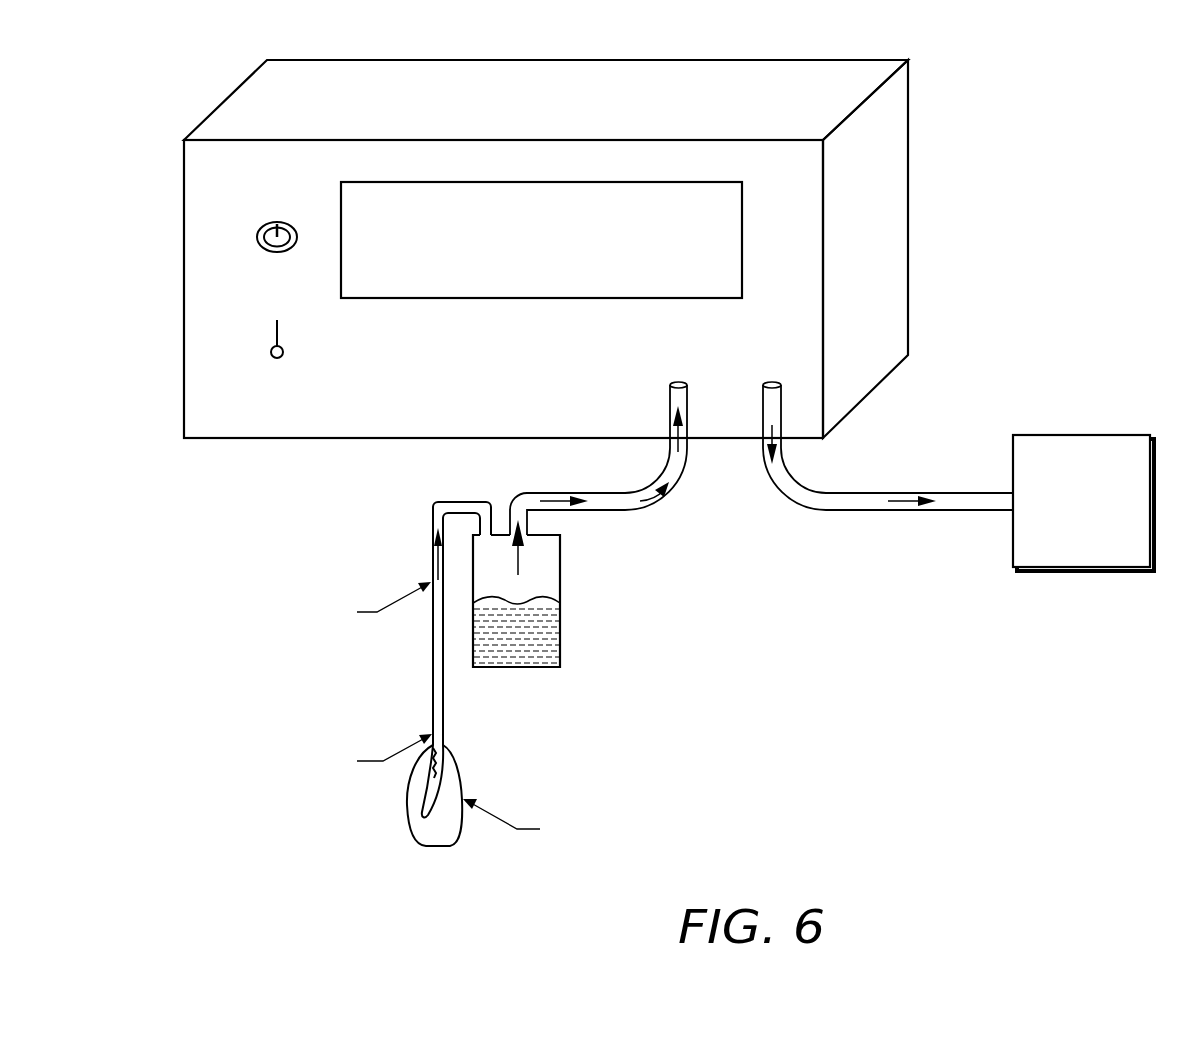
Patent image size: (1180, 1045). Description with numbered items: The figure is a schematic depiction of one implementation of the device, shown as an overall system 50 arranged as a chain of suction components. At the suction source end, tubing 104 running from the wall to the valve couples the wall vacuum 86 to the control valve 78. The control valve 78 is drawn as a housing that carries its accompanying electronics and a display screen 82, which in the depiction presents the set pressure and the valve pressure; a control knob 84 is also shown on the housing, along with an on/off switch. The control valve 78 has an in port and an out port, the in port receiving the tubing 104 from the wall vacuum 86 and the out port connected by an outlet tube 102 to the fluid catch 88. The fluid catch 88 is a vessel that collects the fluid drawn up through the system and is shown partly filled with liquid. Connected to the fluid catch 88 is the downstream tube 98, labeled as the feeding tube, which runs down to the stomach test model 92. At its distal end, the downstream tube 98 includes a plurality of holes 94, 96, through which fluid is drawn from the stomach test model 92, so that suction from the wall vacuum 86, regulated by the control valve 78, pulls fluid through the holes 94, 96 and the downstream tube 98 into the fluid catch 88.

The test system 50 is at (1003, 73).
The control valve 78 is at (903, 192).
The display screen 82 is at (743, 240).
The control knob 84 is at (257, 237).
The wall vacuum 86 is at (1037, 435).
The fluid catch 88 is at (561, 568).
The stomach test model 92 is at (455, 843).
The hole 94 is at (423, 808).
The hole 96 is at (430, 771).
The downstream tube 98 is at (433, 528).
The outlet tube 102 is at (668, 505).
The tubing 104 is at (933, 493).